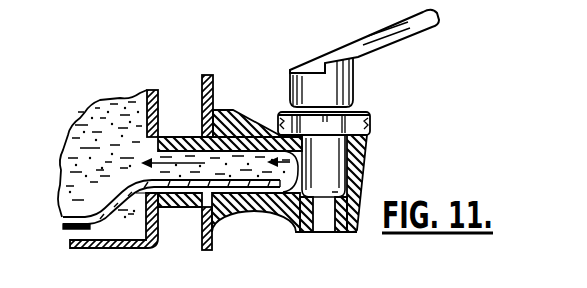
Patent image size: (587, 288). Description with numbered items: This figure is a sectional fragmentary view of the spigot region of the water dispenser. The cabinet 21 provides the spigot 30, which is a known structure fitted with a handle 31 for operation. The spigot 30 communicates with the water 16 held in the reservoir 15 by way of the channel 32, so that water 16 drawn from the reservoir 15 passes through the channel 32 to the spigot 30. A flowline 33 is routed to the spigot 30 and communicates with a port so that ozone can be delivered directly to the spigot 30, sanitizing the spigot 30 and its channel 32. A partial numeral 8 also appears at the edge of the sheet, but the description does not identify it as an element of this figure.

The adjacent figure numeral 8 is at (478, 286).
The reservoir 15 is at (158, 93).
The water 16 is at (90, 124).
The cabinet 21 is at (211, 90).
The spigot 30 is at (360, 182).
The handle 31 is at (438, 16).
The channel 32 is at (250, 133).
The flowline 33 is at (267, 205).